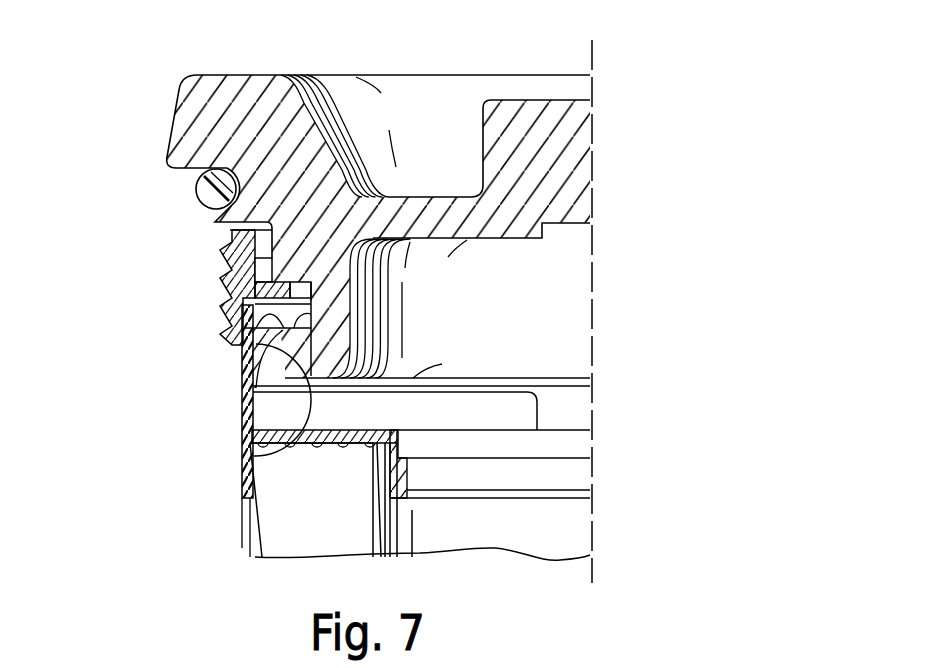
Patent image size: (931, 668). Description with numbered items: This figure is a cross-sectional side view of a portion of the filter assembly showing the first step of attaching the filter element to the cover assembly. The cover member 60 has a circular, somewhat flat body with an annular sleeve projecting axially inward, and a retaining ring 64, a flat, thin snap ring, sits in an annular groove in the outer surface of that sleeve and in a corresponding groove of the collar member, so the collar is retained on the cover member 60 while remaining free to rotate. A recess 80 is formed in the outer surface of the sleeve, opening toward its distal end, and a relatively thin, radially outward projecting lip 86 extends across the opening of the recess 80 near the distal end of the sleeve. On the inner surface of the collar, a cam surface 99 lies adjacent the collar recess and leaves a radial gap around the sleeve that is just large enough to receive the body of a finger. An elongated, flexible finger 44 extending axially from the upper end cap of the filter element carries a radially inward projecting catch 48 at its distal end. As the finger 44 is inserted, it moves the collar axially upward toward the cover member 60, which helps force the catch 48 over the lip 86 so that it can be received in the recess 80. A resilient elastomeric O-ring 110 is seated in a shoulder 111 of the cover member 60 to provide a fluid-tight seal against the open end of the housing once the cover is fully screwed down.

The cover member 60 is at (173, 125).
The shoulder 111 is at (190, 172).
The O-ring 110 is at (194, 192).
The retaining ring 64 is at (228, 283).
The catch 48 is at (252, 300).
The recess 80 is at (308, 283).
The cam surface 99 is at (243, 387).
The flexible finger 44 is at (242, 424).
The lip 86 is at (262, 460).